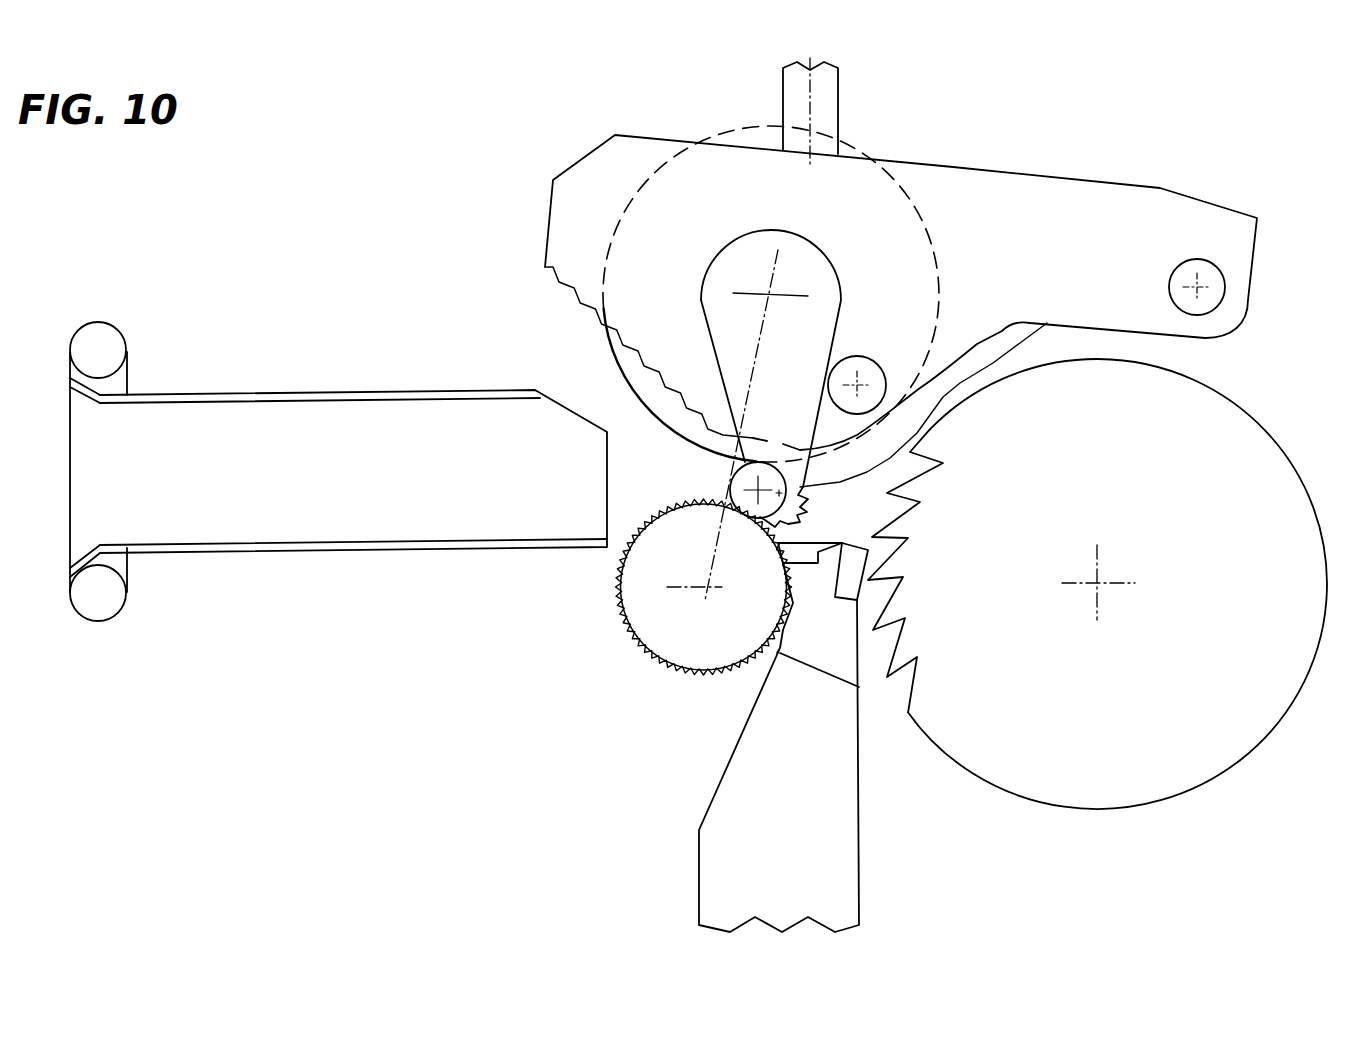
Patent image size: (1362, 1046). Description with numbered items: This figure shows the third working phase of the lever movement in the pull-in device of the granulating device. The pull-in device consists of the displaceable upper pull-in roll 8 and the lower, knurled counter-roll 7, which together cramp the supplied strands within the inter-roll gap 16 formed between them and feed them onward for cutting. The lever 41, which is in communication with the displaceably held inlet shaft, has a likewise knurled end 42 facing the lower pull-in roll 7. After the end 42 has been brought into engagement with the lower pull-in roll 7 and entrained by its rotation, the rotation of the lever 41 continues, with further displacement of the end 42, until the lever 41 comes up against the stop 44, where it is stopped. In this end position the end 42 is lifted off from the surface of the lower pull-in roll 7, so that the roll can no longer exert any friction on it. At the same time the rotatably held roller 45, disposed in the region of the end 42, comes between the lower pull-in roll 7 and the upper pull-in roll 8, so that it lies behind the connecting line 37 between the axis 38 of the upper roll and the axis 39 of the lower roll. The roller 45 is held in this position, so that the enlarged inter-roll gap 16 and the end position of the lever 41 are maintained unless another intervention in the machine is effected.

The counter-roll 7 is at (752, 739).
The pull-in roll 8 is at (859, 272).
The inter-roll gap 16 is at (381, 547).
The connecting line 37 is at (565, 378).
The axis 38 is at (715, 339).
The axis 39 is at (626, 717).
The lever 41 is at (537, 300).
The end 42 is at (1136, 201).
The stop 44 is at (909, 246).
The roller 45 is at (809, 648).